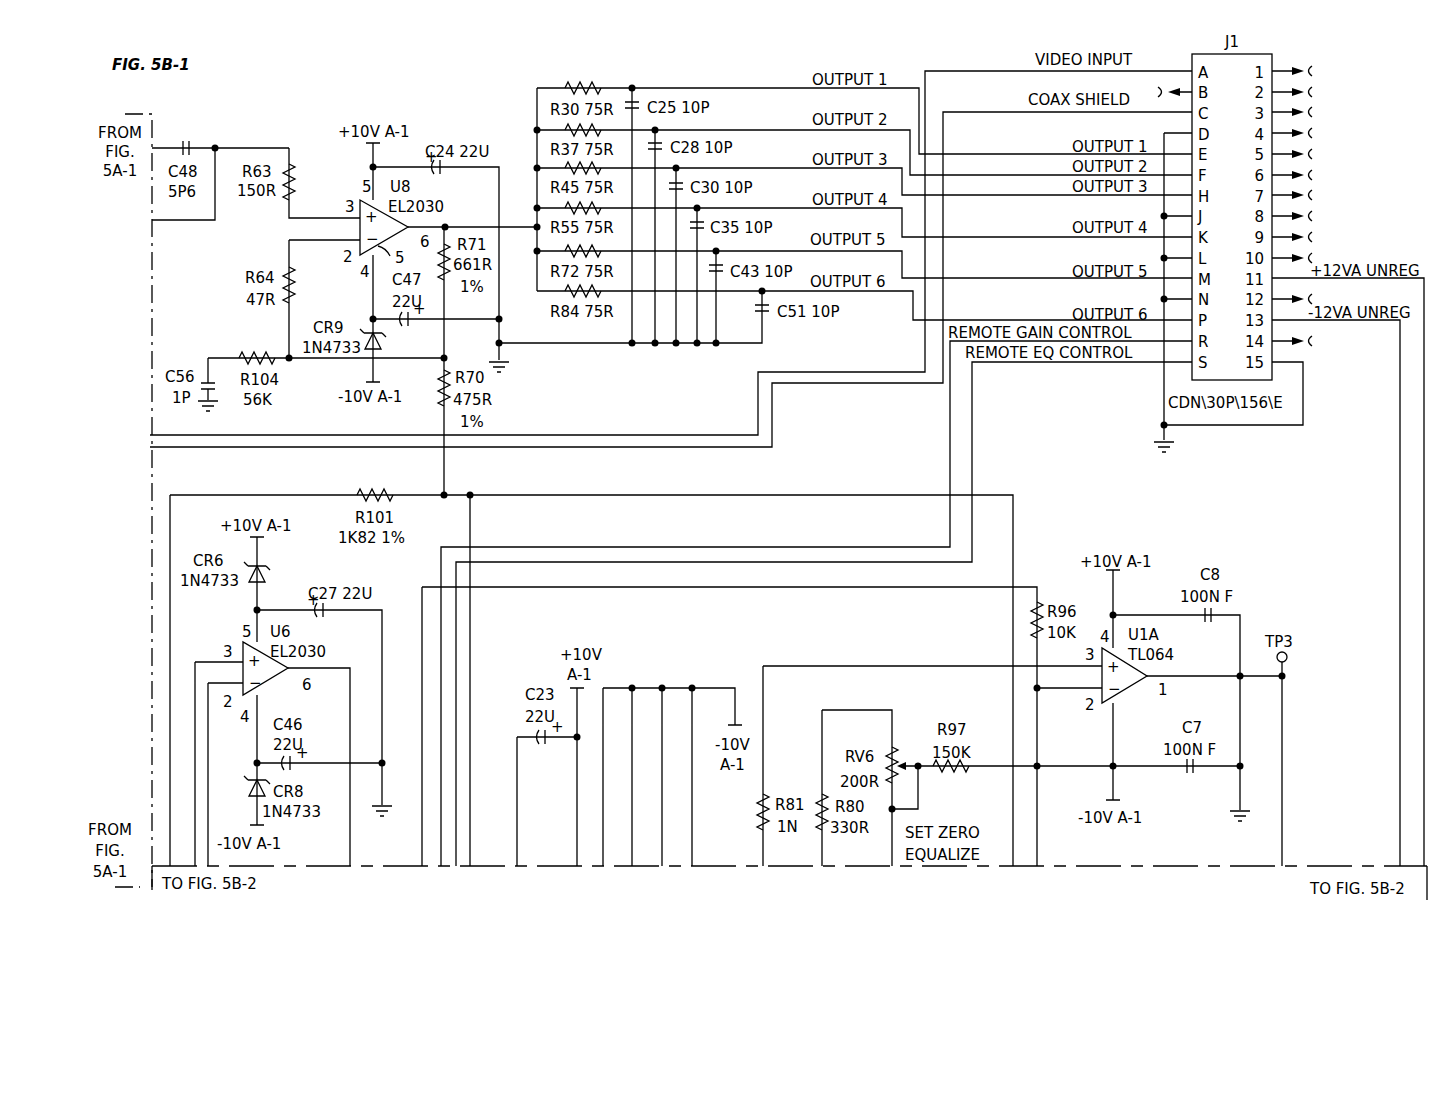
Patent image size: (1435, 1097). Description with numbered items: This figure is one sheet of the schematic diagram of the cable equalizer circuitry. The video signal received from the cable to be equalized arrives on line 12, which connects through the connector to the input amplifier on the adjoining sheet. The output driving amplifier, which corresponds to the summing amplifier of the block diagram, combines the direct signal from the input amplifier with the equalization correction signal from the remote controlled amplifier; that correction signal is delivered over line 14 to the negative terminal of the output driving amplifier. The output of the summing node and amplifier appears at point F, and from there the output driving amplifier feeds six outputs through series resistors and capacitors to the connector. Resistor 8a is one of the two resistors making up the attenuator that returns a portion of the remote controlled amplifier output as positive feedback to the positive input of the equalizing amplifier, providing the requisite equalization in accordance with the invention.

The line 12 is at (957, 68).
The resistor 8a is at (372, 487).
The line 14 is at (446, 493).
The point F is at (447, 226).